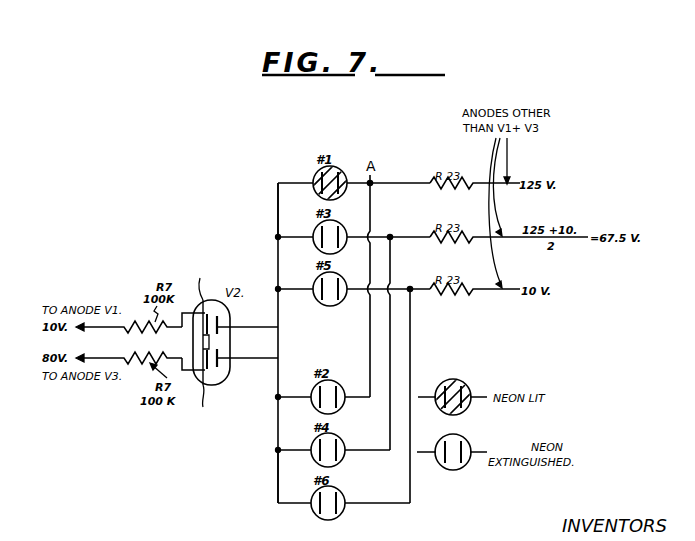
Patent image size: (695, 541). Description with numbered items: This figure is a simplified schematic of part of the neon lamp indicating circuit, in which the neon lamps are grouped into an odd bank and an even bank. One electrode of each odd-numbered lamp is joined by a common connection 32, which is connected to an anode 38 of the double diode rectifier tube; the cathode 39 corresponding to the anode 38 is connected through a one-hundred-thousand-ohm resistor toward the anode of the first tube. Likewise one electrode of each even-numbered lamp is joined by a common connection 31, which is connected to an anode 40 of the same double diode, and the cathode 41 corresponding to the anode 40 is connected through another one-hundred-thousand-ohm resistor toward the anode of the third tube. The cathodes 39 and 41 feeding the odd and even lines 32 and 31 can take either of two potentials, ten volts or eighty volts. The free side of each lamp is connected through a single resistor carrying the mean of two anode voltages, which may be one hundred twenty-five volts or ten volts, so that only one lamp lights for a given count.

The common connection 31 is at (278, 475).
The common connection 32 is at (278, 201).
The anode 38 is at (219, 322).
The cathode 39 is at (199, 280).
The anode 40 is at (219, 361).
The cathode 41 is at (204, 404).